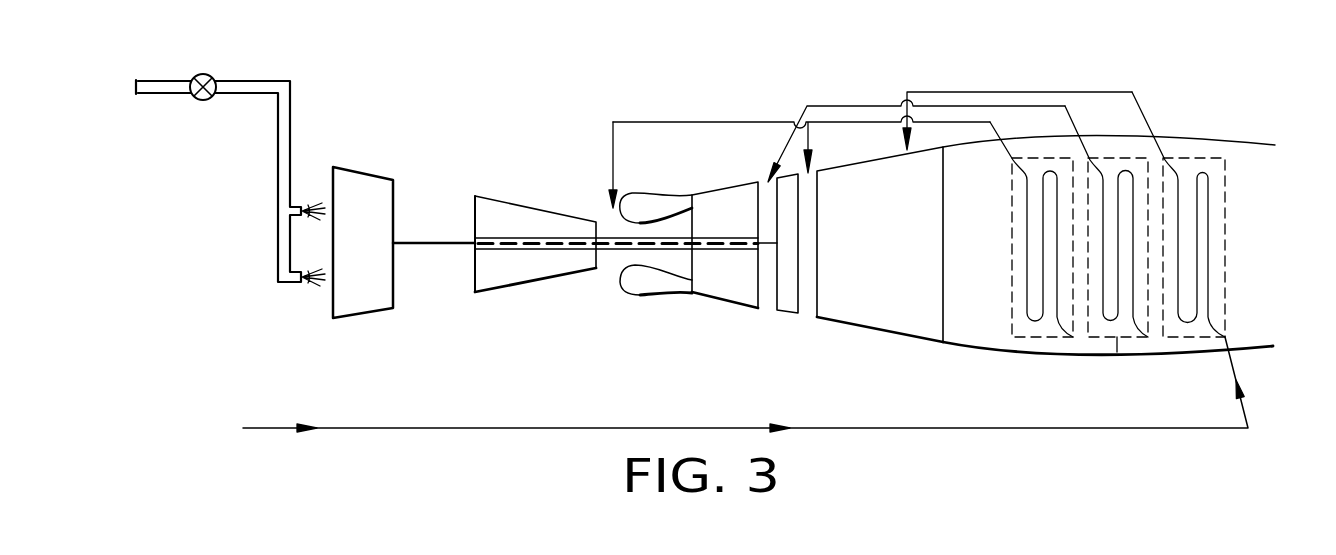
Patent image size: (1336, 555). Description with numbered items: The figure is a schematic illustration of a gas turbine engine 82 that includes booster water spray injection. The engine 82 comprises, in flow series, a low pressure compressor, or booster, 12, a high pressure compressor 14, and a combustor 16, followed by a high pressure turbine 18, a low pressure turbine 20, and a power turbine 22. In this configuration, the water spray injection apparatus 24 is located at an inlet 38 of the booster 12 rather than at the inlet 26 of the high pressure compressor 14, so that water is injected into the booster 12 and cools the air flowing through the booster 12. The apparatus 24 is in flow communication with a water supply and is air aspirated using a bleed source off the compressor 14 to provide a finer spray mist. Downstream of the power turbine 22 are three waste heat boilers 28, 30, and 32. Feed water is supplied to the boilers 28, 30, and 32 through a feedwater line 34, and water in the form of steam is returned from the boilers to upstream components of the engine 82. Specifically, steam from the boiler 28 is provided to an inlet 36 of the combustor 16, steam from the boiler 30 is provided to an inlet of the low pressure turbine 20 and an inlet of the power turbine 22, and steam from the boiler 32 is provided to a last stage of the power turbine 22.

The low pressure compressor 12 is at (383, 312).
The high pressure compressor 14 is at (570, 273).
The combustor 16 is at (647, 296).
The high pressure turbine 18 is at (735, 305).
The low pressure turbine 20 is at (782, 313).
The power turbine 22 is at (872, 336).
The water injection apparatus 24 is at (290, 112).
The inlet of high pressure compressor 26 is at (475, 213).
The waste heat boiler 28 is at (1012, 231).
The waste heat boiler 30 is at (1117, 352).
The waste heat boiler 32 is at (1225, 237).
The feedwater line 34 is at (735, 428).
The inlet of combustor 36 is at (612, 222).
The inlet of low pressure compressor 38 is at (333, 183).
The engine 82 is at (1245, 130).